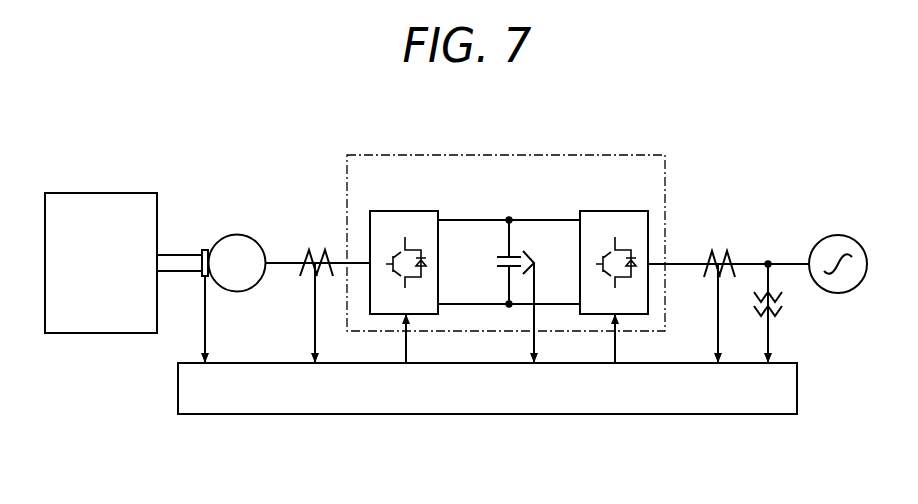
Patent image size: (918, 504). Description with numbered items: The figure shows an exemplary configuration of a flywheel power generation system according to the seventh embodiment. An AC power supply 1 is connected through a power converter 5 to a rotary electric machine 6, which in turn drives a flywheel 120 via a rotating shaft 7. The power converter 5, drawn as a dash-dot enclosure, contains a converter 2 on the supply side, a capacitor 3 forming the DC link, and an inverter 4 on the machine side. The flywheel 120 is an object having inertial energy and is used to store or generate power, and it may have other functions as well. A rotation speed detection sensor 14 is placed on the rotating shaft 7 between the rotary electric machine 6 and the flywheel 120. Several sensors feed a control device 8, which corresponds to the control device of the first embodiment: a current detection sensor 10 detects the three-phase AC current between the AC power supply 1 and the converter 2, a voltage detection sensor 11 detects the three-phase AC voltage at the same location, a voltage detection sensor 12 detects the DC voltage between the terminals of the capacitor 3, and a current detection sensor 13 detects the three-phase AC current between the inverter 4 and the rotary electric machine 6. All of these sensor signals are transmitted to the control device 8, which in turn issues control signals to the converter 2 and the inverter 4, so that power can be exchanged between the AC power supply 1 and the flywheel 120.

The flywheel 120 is at (102, 192).
The rotating shaft 7 is at (197, 278).
The rotation speed detection sensor 14 is at (203, 247).
The rotary electric machine 6 is at (230, 235).
The current detection sensor 13 is at (307, 248).
The power converter 5 is at (347, 197).
The inverter 4 is at (402, 210).
The capacitor 3 is at (500, 258).
The voltage detection sensor 12 is at (530, 252).
The converter 2 is at (628, 210).
The current detection sensor 10 is at (717, 250).
The voltage detection sensor 11 is at (788, 306).
The AC power supply 1 is at (826, 238).
The control device 8 is at (307, 415).